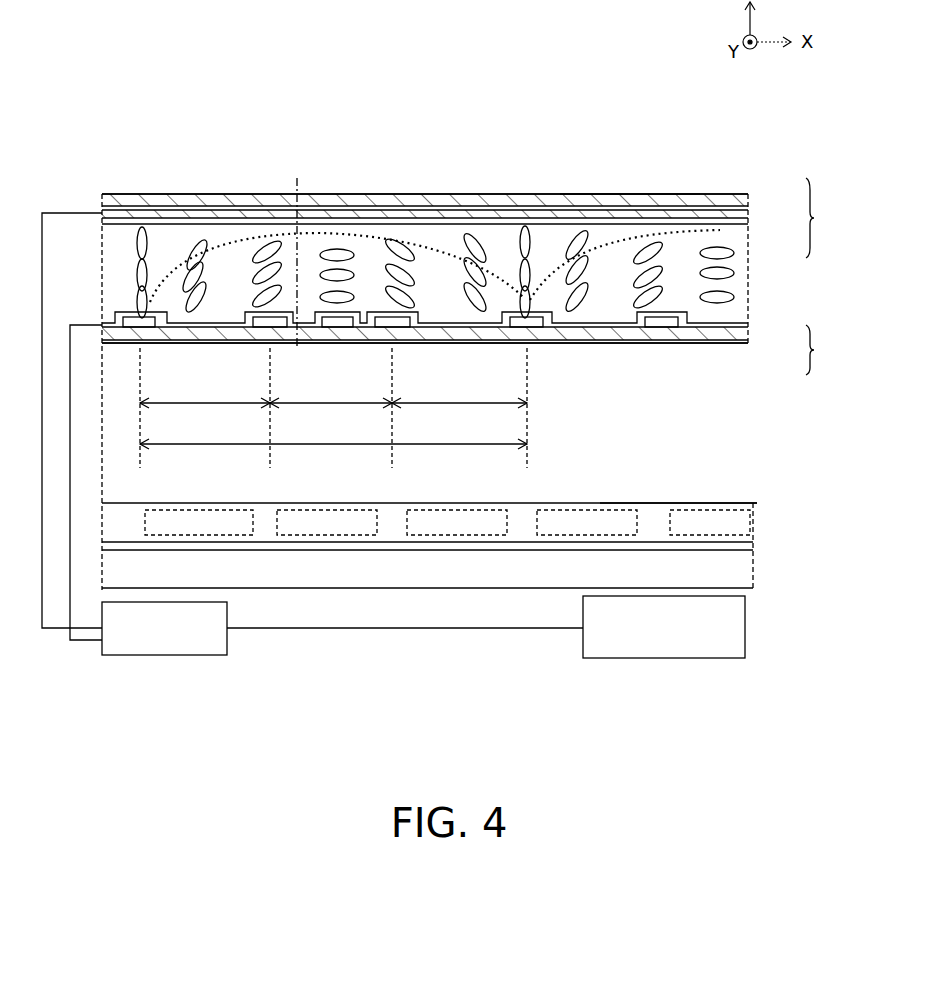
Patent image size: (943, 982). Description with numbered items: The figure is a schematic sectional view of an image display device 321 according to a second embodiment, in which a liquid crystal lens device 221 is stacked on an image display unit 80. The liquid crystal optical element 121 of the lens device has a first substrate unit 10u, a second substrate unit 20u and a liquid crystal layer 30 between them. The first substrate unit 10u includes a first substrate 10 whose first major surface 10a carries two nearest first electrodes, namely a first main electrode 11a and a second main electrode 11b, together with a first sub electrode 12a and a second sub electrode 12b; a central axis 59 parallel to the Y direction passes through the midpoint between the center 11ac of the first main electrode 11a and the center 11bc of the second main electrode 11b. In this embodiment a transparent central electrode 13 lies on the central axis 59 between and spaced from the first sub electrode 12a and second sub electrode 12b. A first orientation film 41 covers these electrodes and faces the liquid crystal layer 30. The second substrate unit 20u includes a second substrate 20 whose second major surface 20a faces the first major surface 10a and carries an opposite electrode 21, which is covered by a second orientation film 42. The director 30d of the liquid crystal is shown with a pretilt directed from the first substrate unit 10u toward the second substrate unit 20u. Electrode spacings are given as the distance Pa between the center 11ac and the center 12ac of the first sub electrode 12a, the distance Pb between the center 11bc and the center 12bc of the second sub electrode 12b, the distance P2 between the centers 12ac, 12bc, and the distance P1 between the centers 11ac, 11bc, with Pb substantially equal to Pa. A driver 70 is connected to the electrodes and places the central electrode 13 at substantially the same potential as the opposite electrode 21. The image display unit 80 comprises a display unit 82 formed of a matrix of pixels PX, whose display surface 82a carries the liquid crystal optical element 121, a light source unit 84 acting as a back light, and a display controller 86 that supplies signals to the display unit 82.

The image display device 321 is at (597, 97).
The liquid crystal optical element 121 is at (680, 172).
The liquid crystal lens device 221 is at (92, 175).
The second substrate 20 is at (748, 193).
The second major surface 20a is at (622, 205).
The opposite electrode 21 is at (750, 210).
The second orientation film 42 is at (750, 221).
The second substrate unit 20u is at (834, 218).
The liquid crystal layer 30 is at (748, 270).
The director 30d is at (577, 240).
The first major surface 10a is at (748, 323).
The first orientation film 41 is at (748, 333).
The first substrate 10 is at (748, 342).
The first substrate unit 10u is at (835, 350).
The first main electrode 11a is at (145, 328).
The first sub electrode 12a is at (253, 328).
The central electrode 13 is at (333, 328).
The second sub electrode 12b is at (400, 328).
The second main electrode 11b is at (527, 328).
The central axis 59 is at (297, 248).
The center of first main electrode 11ac is at (130, 425).
The center of first sub electrode 12ac is at (265, 425).
The center of second sub electrode 12bc is at (385, 425).
The center of second main electrode 11bc is at (523, 425).
The distance Pa is at (205, 416).
The distance P2 is at (331, 416).
The distance Pb is at (459, 416).
The distance P1 is at (333, 459).
The display unit 82 is at (523, 520).
The display surface 82a is at (650, 503).
The light source unit 84 is at (562, 568).
The display controller 86 is at (642, 633).
The image display unit 80 is at (470, 715).
The pixels PX is at (225, 553).
The driver 70 is at (150, 637).